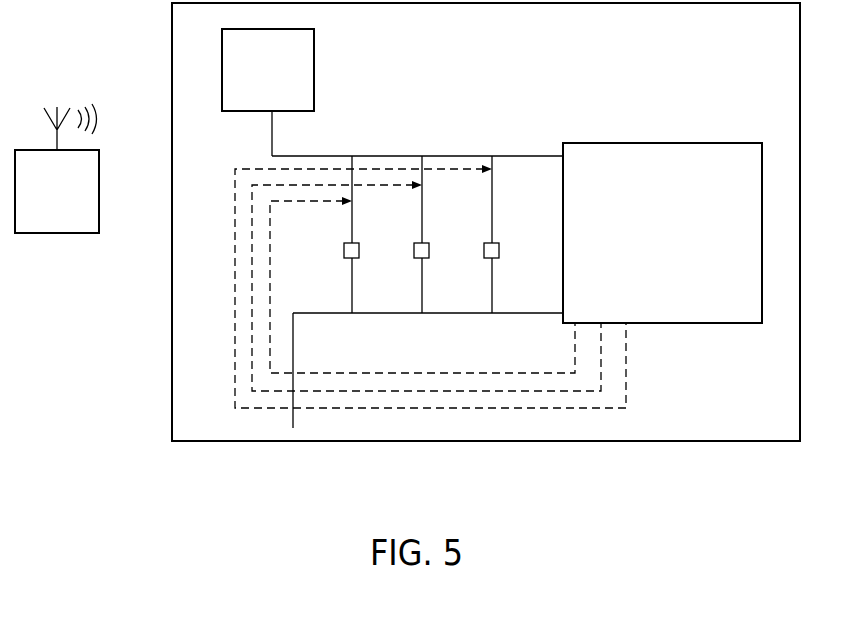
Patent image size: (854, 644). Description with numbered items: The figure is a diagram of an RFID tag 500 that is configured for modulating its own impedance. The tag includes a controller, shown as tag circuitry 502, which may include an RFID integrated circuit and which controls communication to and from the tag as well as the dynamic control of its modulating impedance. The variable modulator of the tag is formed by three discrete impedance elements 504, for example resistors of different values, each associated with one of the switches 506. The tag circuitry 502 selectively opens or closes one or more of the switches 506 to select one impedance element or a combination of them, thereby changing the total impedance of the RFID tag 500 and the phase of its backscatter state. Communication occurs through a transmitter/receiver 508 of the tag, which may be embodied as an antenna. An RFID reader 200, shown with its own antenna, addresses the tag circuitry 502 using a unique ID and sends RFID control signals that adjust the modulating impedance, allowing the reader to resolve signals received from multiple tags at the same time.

The RFID reader 200 is at (73, 203).
The RFID tag 500 is at (663, 442).
The tag circuitry 502 is at (678, 269).
The impedance elements 504 is at (511, 265).
The switches 506 is at (508, 222).
The transmitter/receiver 508 is at (283, 83).